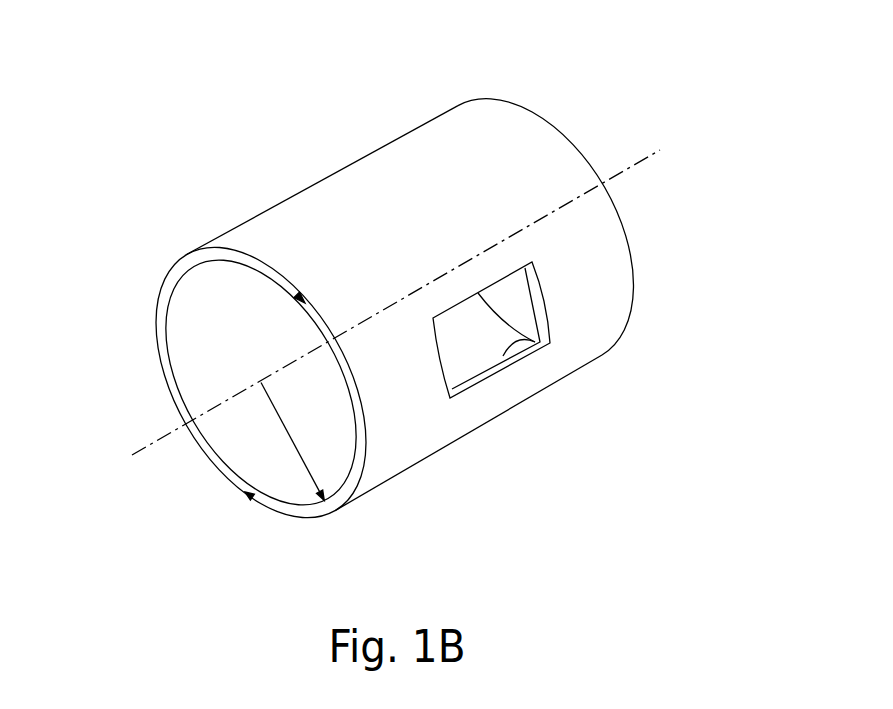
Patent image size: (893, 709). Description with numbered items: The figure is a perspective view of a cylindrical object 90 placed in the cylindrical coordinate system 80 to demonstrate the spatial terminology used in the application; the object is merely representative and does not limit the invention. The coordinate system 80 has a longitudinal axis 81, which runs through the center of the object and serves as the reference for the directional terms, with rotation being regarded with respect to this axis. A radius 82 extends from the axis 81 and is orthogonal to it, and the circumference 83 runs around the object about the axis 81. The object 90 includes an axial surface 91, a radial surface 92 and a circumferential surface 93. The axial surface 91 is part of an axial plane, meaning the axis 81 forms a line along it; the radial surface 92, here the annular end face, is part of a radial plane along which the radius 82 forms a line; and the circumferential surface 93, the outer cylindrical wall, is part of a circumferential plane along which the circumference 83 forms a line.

The cylindrical coordinate system 80 is at (362, 326).
The longitudinal axis 81 is at (163, 438).
The radius 82 is at (297, 455).
The circumference 83 is at (157, 323).
The cylindrical object 90 is at (412, 109).
The axial surface 91 is at (530, 346).
The radial surface 92 is at (283, 506).
The circumferential surface 93 is at (347, 200).